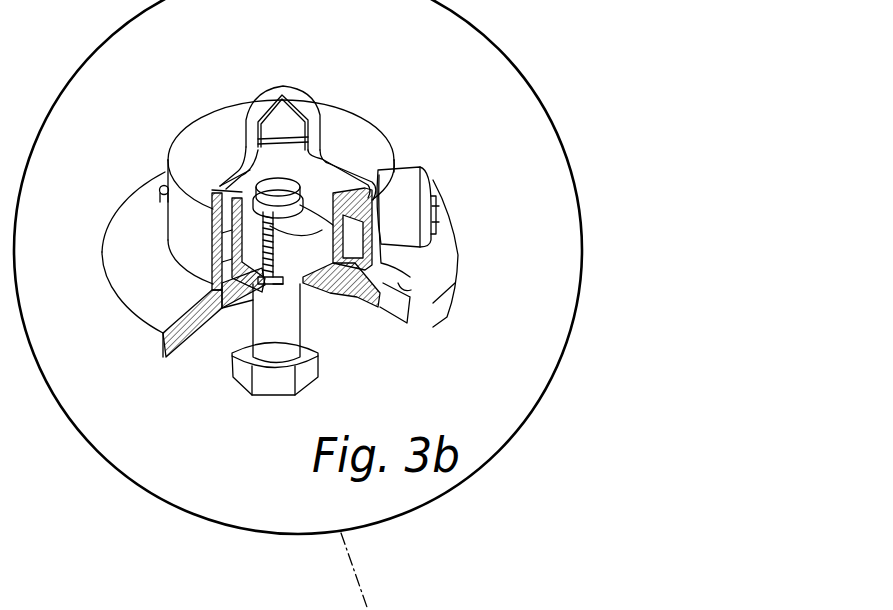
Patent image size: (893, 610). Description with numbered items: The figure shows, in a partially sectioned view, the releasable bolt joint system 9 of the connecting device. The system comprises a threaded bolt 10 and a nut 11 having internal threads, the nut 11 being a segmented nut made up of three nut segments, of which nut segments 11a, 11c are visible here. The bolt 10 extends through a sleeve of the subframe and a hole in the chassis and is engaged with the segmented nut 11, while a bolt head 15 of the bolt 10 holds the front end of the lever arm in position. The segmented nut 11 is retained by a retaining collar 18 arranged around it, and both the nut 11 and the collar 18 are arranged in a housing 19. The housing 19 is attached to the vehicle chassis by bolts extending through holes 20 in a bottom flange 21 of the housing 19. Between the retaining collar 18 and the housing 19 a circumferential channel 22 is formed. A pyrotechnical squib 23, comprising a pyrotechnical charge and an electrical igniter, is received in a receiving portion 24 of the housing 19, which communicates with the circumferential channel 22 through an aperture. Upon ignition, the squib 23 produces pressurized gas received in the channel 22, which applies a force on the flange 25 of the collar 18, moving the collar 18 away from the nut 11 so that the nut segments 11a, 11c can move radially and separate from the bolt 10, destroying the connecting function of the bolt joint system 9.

The releasable bolt joint system 9 is at (432, 84).
The threaded bolt 10 is at (272, 347).
The nut 11 is at (278, 183).
The nut segment 11a is at (253, 193).
The nut segment 11c is at (311, 191).
The bolt head 15 is at (247, 373).
The retaining collar 18 is at (220, 190).
The housing 19 is at (190, 237).
The holes 20 is at (163, 186).
The bottom flange 21 is at (157, 307).
The circumferential channel 22 is at (357, 290).
The pyrotechnical squib 23 is at (436, 184).
The receiving portion 24 is at (410, 180).
The flange 25 is at (358, 198).